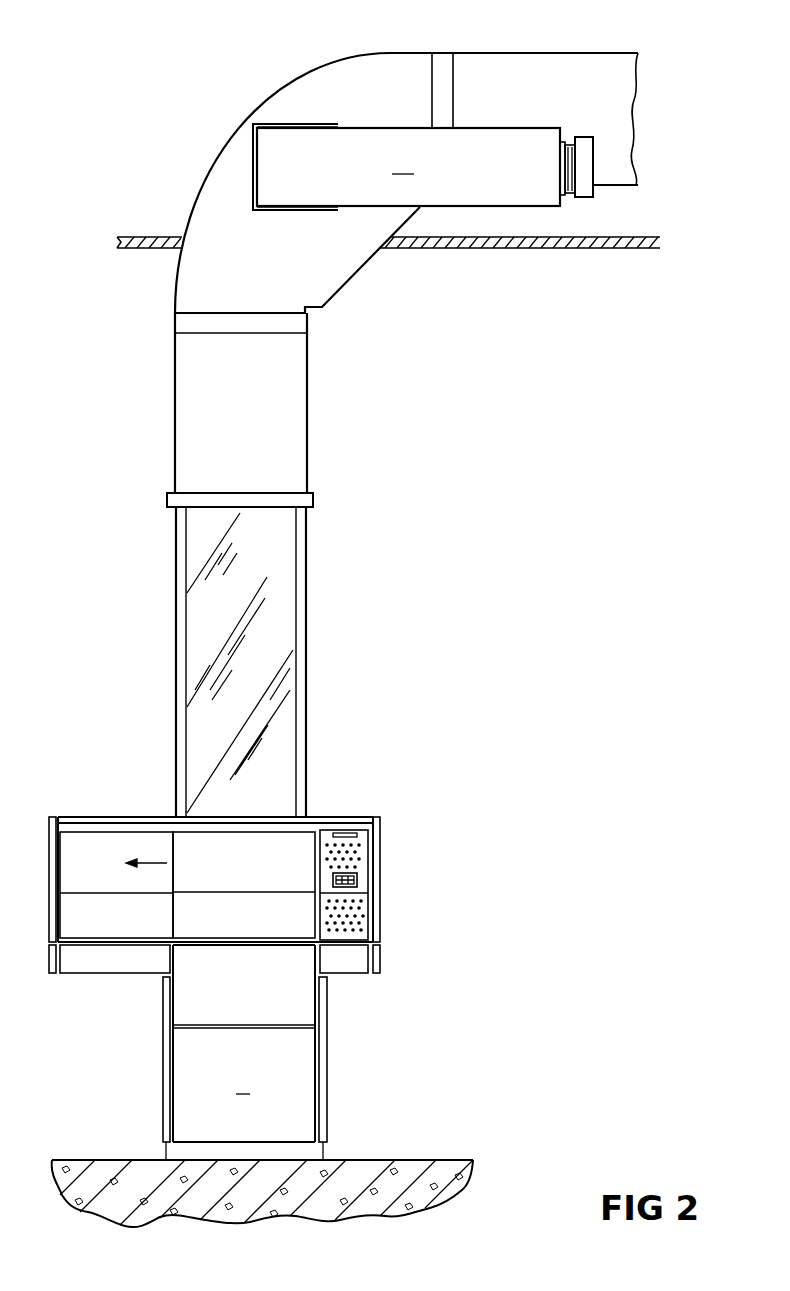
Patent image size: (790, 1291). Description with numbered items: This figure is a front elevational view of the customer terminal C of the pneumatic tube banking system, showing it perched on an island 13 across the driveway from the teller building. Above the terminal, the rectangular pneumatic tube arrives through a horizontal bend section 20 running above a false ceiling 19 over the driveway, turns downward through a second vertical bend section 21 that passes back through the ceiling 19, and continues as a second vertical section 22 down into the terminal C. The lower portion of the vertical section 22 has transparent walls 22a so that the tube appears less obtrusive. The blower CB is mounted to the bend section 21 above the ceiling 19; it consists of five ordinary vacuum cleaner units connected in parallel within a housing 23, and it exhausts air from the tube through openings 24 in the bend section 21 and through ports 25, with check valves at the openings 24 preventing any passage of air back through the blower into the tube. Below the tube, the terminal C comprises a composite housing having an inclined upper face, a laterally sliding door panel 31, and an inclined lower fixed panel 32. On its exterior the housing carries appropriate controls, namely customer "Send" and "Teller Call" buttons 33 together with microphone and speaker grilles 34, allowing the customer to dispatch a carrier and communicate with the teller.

The island 13 is at (425, 1160).
The false ceiling 19 is at (513, 253).
The horizontal bend section 20 is at (577, 53).
The second vertical bend section 21 is at (317, 73).
The second vertical section 22 is at (297, 395).
The transparent walls 22a is at (287, 605).
The housing 23 is at (513, 128).
The openings 24 is at (280, 215).
The ports 25 is at (583, 137).
The laterally sliding door panel 31 is at (180, 902).
The inclined lower fixed panel 32 is at (307, 1005).
The customer Send and Teller Call buttons 33 is at (357, 880).
The microphone and speaker grilles 34 is at (362, 860).